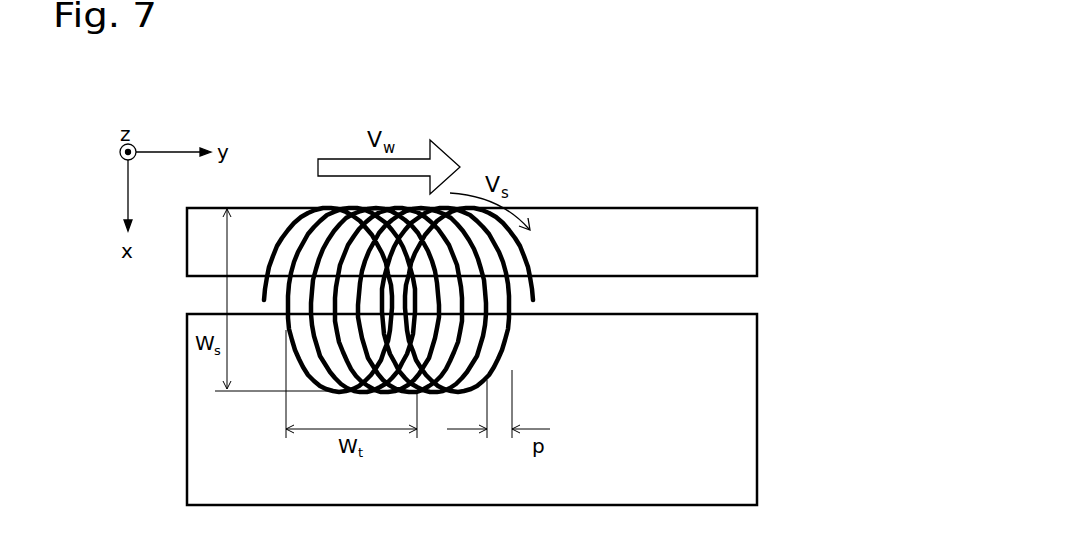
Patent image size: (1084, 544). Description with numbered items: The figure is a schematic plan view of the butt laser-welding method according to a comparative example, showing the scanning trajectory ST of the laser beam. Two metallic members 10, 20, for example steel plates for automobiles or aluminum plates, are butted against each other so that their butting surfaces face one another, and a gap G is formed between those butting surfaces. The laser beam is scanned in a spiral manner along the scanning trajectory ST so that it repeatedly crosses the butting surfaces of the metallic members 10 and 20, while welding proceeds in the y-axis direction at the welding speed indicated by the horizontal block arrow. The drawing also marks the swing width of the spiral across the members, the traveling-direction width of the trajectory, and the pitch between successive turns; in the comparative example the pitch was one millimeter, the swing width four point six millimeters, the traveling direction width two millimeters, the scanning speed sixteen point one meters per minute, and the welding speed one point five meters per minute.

The metallic member 10 is at (750, 248).
The metallic member 20 is at (752, 401).
The gap G is at (193, 298).
The scanning trajectory ST is at (298, 210).